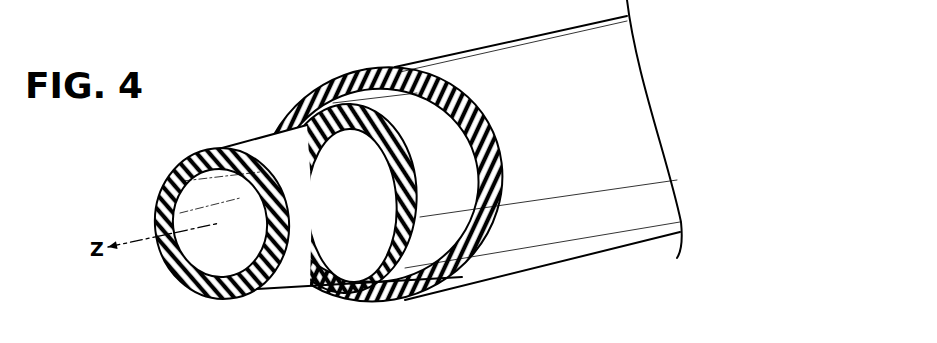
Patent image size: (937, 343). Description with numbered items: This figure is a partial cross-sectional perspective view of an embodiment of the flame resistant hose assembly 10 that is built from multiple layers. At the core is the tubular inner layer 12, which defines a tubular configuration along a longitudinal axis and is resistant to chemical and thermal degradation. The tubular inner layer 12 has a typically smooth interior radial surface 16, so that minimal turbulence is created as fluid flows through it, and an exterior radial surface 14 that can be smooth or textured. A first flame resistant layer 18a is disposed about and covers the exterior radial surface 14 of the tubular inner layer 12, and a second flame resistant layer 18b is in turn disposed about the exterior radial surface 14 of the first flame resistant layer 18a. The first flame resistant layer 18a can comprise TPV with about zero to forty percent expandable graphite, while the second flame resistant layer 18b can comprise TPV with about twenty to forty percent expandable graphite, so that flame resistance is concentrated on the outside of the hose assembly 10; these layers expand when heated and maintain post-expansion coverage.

The hose assembly 10 is at (295, 63).
The tubular inner layer 12 is at (262, 287).
The exterior radial surface 14 is at (308, 260).
The interior radial surface 16 is at (197, 186).
The first flame resistant layer 18a is at (420, 245).
The second flame resistant layer 18b is at (568, 231).